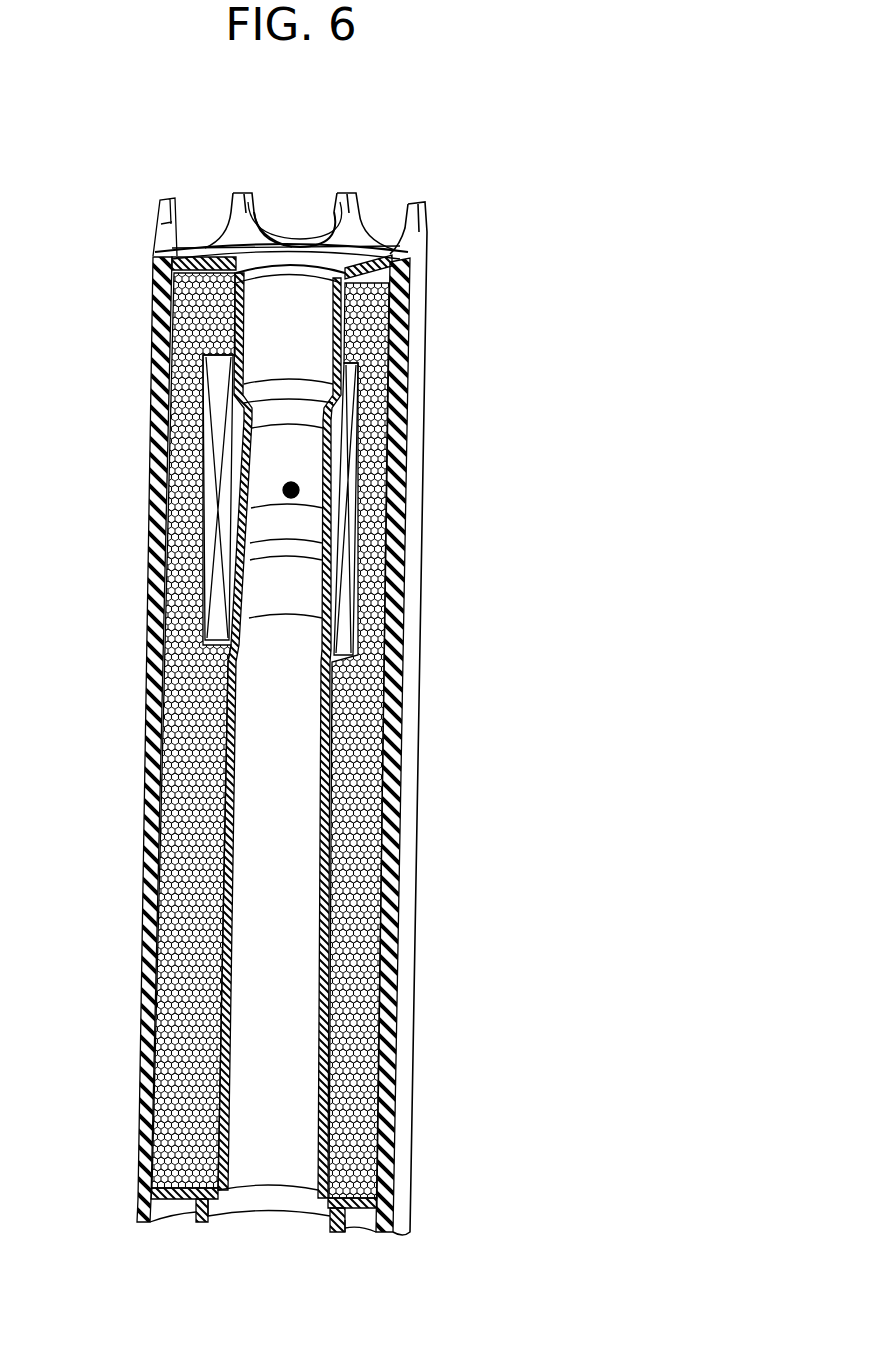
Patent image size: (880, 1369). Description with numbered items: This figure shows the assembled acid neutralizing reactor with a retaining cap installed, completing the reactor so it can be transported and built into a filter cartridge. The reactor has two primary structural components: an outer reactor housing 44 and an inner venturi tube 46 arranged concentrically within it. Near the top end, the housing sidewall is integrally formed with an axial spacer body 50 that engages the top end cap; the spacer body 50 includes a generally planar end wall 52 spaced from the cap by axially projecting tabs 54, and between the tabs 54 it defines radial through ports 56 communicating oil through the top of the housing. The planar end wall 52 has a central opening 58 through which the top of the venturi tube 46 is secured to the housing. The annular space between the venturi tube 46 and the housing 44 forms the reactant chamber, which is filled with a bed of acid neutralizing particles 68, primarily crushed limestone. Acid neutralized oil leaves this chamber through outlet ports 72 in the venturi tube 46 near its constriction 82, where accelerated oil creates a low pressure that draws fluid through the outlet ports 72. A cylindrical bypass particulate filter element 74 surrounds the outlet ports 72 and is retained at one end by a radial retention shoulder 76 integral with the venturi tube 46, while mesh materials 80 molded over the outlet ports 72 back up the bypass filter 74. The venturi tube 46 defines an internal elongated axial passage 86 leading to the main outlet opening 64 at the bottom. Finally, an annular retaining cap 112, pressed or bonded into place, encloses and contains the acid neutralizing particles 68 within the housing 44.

The outer reactor housing 44 is at (155, 566).
The inner venturi tube 46 is at (153, 332).
The axial spacer body 50 is at (213, 238).
The planar end wall 52 is at (203, 247).
The axially projecting tabs 54 is at (236, 194).
The notch 56 is at (303, 233).
The central opening 58 is at (312, 280).
The central opening 64 is at (290, 1205).
The acid neutralizing particles 68 is at (397, 823).
The outlet ports 72 is at (290, 438).
The bypass particulate filter element 74 is at (395, 653).
The radial retention shoulder 76 is at (347, 691).
The mesh materials 80 is at (297, 482).
The constriction 82 is at (352, 526).
The internal elongated axial passage 86 is at (302, 935).
The annular retaining cap 112 is at (372, 1245).